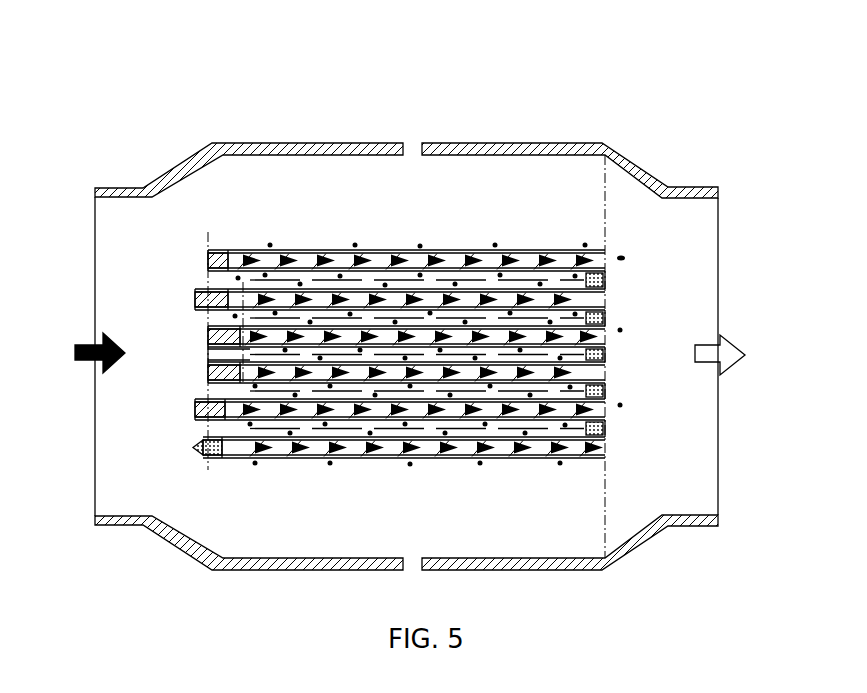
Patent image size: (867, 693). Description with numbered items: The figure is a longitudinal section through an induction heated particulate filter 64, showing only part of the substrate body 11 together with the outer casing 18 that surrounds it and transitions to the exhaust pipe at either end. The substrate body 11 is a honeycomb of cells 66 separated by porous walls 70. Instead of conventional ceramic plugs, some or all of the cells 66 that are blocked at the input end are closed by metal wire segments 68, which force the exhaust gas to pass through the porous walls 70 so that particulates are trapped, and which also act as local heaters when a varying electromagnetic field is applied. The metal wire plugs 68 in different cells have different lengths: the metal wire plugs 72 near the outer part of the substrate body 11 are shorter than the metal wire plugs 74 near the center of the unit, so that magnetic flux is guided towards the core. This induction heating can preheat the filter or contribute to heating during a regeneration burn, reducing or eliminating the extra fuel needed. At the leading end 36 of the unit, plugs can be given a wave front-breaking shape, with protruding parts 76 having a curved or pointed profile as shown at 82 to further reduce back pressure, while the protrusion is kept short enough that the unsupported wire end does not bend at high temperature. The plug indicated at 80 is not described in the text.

The induction heated particulate filter 64 is at (442, 110).
The outer casing 18 is at (233, 143).
The substrate body 11 is at (398, 235).
The metal wire plugs near outer part 72 is at (225, 343).
The metal wire segments 68 is at (208, 265).
The protruding parts 76 is at (196, 299).
The metal wire plugs near center 74 is at (222, 370).
The leading end 36 is at (196, 432).
The plug 80 is at (213, 458).
The curved or pointed profile 82 is at (199, 453).
The cells 66 is at (490, 285).
The porous walls 70 is at (470, 398).